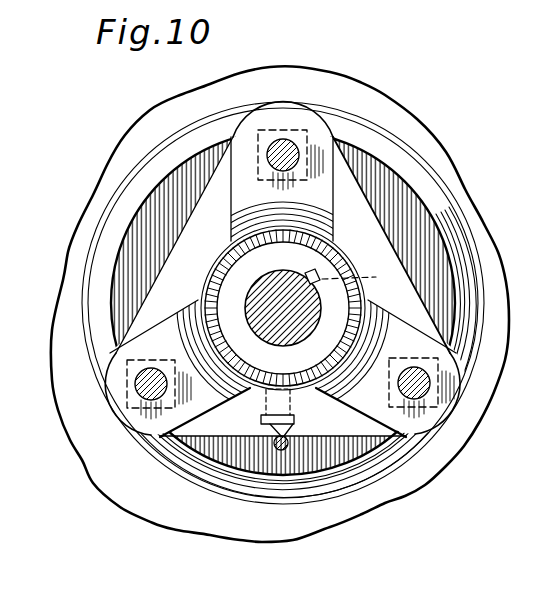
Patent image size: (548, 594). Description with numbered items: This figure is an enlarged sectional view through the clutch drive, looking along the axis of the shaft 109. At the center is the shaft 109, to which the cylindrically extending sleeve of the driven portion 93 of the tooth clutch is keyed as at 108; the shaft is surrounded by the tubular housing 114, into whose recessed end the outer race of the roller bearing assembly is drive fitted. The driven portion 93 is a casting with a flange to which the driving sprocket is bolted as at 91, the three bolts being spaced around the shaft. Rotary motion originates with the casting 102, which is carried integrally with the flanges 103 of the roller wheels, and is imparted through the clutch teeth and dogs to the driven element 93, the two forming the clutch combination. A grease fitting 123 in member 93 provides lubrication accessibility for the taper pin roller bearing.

The bolts 91 is at (287, 141).
The driven portion of tooth clutch 93 is at (122, 280).
The casting 102 is at (118, 212).
The flanges 103 is at (131, 155).
The key 108 is at (353, 283).
The shaft 109 is at (252, 293).
The tubular housing 114 is at (350, 263).
The grease fitting 123 is at (281, 450).